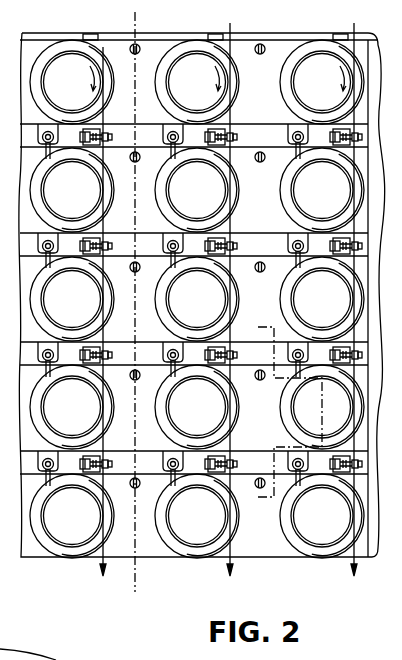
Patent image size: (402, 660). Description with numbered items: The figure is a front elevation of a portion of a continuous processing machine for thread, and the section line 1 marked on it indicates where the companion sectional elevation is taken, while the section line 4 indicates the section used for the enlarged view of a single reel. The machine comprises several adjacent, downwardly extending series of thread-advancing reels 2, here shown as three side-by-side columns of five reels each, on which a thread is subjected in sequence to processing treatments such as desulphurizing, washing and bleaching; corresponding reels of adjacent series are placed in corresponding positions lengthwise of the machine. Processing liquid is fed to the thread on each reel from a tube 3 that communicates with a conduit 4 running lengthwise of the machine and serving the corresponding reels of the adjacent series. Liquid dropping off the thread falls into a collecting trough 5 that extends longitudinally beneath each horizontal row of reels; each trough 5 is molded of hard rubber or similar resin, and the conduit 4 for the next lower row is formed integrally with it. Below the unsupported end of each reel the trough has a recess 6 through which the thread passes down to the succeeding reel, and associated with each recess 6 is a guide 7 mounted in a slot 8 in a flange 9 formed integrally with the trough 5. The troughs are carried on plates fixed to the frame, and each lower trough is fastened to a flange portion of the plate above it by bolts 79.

The section line 1— 1 is at (150, 586).
The thread-advancing reel 2 is at (62, 99).
The tube 3 is at (166, 162).
The conduit 4 is at (280, 497).
The collecting trough 5 is at (228, 299).
The recess 6 is at (234, 238).
The guide 7 is at (240, 247).
The slot 8 is at (219, 238).
The flange 9 is at (215, 257).
The bolt 79 is at (260, 163).